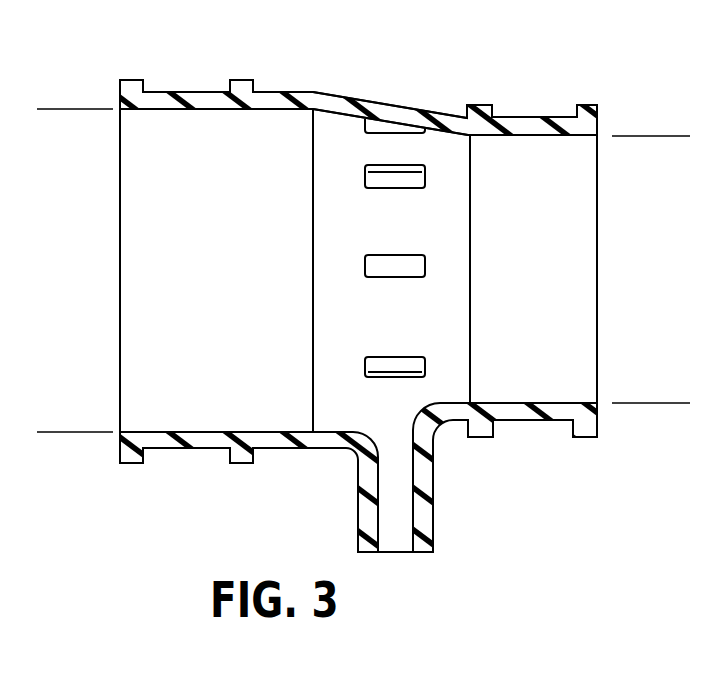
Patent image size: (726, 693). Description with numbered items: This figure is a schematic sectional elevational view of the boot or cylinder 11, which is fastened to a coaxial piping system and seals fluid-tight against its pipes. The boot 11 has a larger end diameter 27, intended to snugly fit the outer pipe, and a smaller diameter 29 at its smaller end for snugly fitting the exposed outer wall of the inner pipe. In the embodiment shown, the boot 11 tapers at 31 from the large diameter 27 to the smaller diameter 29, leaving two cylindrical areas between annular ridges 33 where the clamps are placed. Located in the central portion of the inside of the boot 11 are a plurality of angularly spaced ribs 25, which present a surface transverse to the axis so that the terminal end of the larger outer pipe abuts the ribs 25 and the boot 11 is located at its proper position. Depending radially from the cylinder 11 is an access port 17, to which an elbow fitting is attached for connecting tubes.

The boot 11 is at (306, 92).
The access port 17 is at (358, 523).
The ribs 25 is at (388, 132).
The larger end diameter 27 is at (63, 110).
The smaller diameter 29 is at (652, 136).
The taper 31 is at (443, 120).
The annular ridges 33 is at (138, 85).